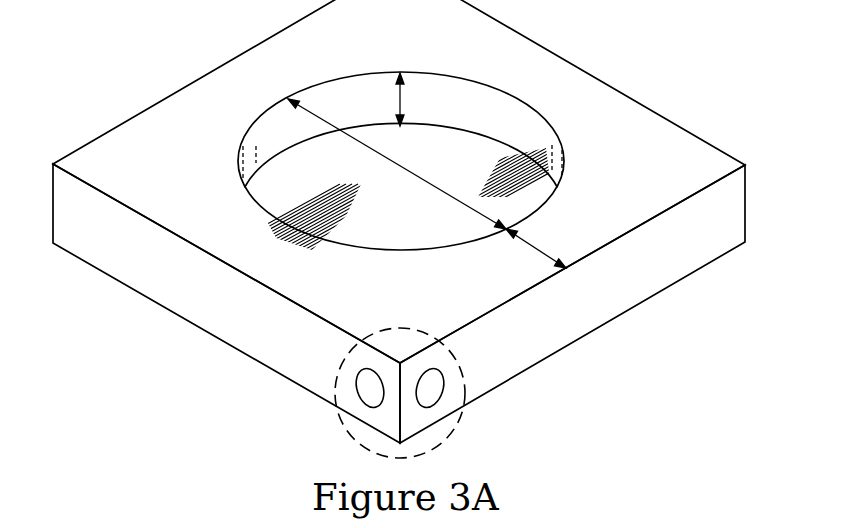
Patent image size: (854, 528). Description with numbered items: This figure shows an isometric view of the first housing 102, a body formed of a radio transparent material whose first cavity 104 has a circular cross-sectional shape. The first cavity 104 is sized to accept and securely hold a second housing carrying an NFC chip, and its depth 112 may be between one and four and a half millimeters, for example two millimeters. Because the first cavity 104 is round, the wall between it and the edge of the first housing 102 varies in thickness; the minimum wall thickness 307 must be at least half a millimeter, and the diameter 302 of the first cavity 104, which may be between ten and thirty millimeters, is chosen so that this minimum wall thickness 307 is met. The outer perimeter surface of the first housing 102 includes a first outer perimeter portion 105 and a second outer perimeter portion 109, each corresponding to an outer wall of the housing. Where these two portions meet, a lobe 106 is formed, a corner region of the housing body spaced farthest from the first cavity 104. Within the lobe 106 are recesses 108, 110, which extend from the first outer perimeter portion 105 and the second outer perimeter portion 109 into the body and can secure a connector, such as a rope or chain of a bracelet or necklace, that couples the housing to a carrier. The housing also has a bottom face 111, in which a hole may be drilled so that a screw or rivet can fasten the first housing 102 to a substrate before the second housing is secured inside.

The first housing 102 is at (182, 84).
The first cavity 104 is at (355, 90).
The first outer perimeter portion 105 is at (212, 317).
The lobe 106 is at (470, 374).
The recess 108 is at (370, 393).
The second outer perimeter portion 109 is at (608, 306).
The recess 110 is at (430, 393).
The bottom face 111 is at (478, 160).
The depth 112 is at (404, 99).
The diameter 302 is at (402, 166).
The minimum wall thickness 307 is at (546, 247).